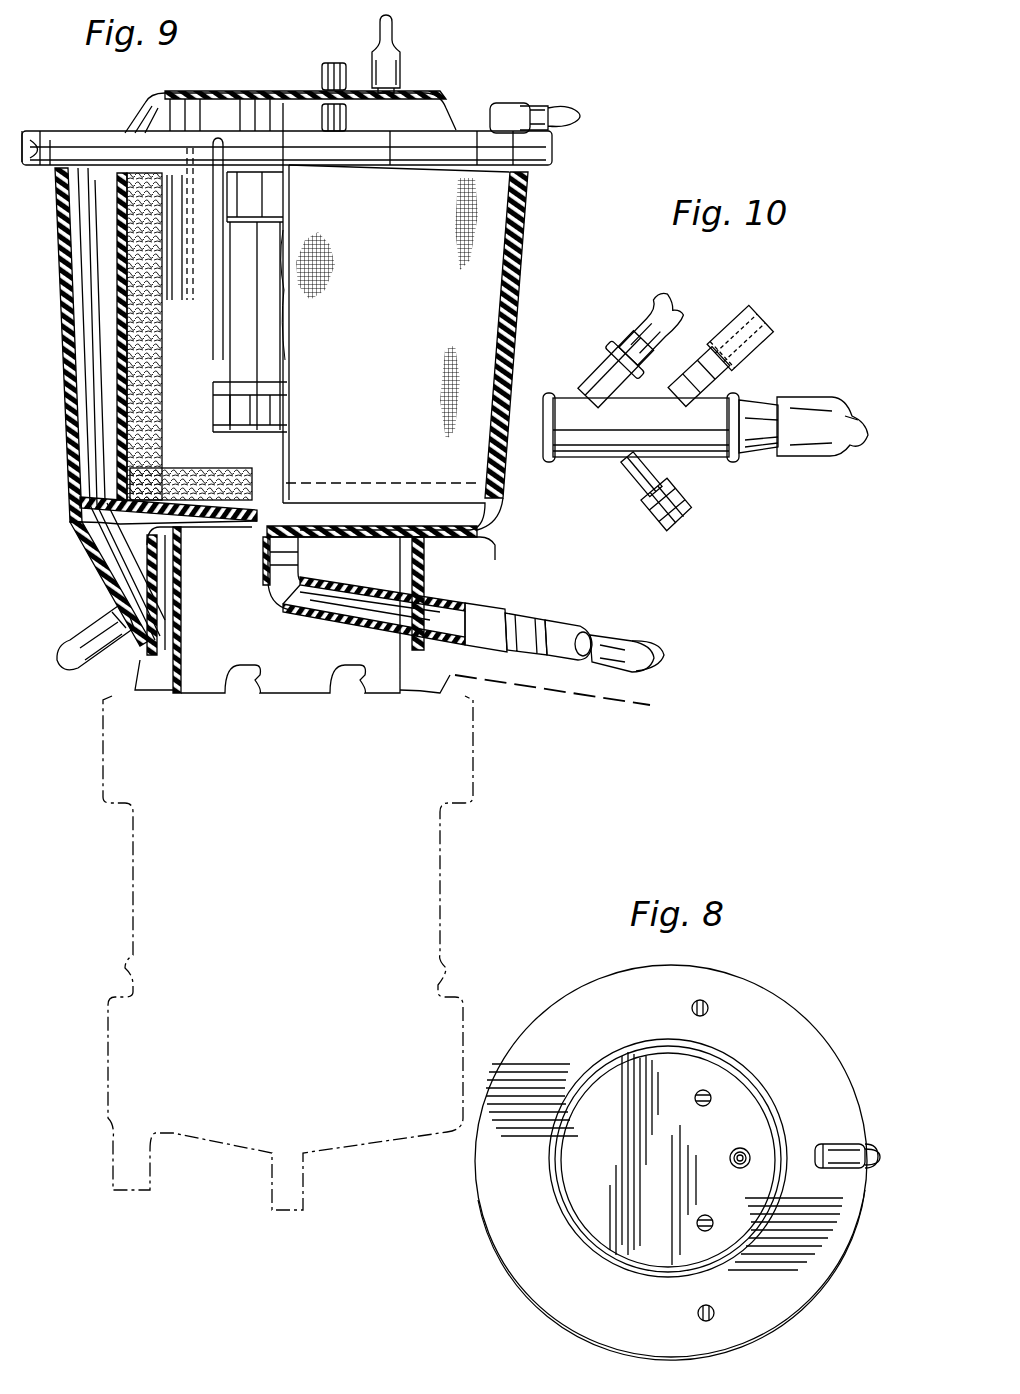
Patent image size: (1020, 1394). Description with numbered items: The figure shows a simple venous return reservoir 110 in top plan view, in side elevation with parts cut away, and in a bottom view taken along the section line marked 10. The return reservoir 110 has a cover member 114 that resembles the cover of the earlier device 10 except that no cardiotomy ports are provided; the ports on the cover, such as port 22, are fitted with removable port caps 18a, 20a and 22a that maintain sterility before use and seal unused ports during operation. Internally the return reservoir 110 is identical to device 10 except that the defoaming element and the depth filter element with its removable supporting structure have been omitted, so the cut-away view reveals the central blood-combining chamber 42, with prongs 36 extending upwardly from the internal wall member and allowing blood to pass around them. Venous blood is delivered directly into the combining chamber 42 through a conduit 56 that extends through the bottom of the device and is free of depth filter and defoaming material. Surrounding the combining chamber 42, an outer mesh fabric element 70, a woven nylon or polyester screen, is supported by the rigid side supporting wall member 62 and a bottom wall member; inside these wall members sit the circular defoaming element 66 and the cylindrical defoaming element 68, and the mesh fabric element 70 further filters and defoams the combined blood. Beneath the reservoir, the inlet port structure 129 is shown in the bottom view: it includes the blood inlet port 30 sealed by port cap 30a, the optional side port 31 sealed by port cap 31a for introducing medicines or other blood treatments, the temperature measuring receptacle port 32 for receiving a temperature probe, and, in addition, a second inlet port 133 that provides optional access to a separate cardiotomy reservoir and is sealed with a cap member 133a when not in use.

In FIG. 9, the cover member 114 is at (447, 112).
In FIG. 8, the cover member 114 is at (548, 1005).
In FIG. 9, the port cap 18a is at (320, 115).
In FIG. 8, the port cap 18a is at (710, 1008).
In FIG. 9, the port cap 20a is at (400, 56).
In FIG. 8, the port cap 20a is at (750, 1153).
In FIG. 9, the port cap 22a is at (546, 108).
In FIG. 8, the port cap 22a is at (852, 1172).
In FIG. 8, the port 22 is at (820, 1150).
In FIG. 9, the venous return reservoir 110 is at (545, 250).
In FIG. 9, the mesh fabric element 70 is at (330, 283).
In FIG. 9, the central blood-combining chamber 42 is at (288, 418).
In FIG. 9, the cylindrical defoaming element 68 is at (135, 358).
In FIG. 9, the rigid side supporting wall member 62 is at (108, 385).
In FIG. 9, the circular defoaming element 66 is at (140, 506).
In FIG. 9, the conduit 56 is at (268, 584).
In FIG. 9, the inlet port structure 129 is at (507, 614).
In FIG. 10, the inlet port structure 129 is at (610, 440).
In FIG. 9, the device 10 is at (451, 680).
In FIG. 10, the blood inlet port 30 is at (758, 398).
In FIG. 10, the port cap 30a is at (803, 400).
In FIG. 10, the second inlet port 133 is at (590, 367).
In FIG. 10, the cap member 133a is at (627, 317).
In FIG. 10, the temperature measuring receptacle port 32 is at (707, 337).
In FIG. 10, the side port 31 is at (632, 474).
In FIG. 10, the port cap 31a is at (692, 516).
In FIG. 9, the prongs 36 is at (220, 147).